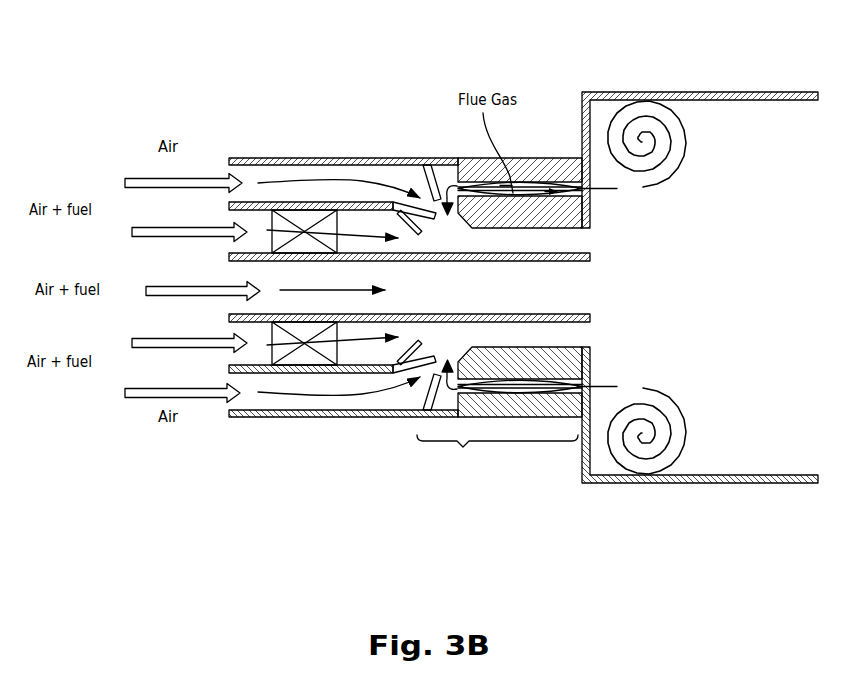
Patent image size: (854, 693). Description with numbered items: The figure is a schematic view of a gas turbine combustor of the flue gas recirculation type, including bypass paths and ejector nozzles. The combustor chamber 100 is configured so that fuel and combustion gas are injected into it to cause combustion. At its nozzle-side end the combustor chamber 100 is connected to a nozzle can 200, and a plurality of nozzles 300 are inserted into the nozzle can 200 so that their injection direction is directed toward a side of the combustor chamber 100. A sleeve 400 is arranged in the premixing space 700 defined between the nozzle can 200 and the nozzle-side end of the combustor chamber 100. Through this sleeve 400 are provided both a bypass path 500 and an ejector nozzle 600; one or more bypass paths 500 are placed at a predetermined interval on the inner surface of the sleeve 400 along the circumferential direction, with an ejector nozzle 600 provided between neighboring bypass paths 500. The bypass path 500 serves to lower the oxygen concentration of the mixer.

The combustor chamber 100 is at (681, 91).
The nozzle can 200 is at (313, 194).
The nozzles 300 is at (258, 237).
The sleeve 400 is at (483, 210).
The bypass path 500 is at (565, 383).
The ejector nozzle 600 is at (545, 182).
The premixing space 700 is at (497, 454).